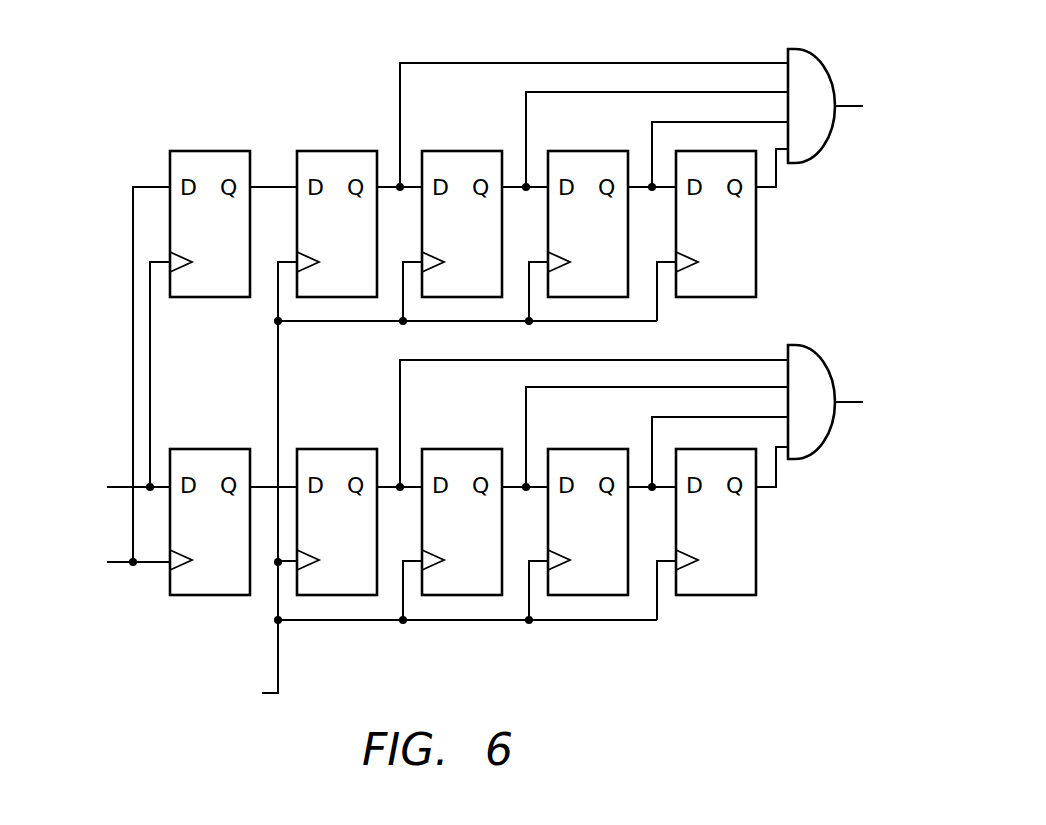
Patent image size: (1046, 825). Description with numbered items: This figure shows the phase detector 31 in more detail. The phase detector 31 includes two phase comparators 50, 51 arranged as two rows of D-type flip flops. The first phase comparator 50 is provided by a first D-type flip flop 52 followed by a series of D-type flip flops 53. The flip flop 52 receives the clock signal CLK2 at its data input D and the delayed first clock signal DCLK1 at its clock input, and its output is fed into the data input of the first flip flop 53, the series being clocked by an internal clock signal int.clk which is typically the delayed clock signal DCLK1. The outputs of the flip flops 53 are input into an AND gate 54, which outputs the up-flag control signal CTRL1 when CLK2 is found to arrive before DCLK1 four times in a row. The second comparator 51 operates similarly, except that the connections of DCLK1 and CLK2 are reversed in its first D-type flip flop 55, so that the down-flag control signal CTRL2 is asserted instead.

The phase detector 31 is at (284, 80).
The first phase comparator 50 is at (812, 254).
The second phase comparator 51 is at (812, 562).
The first D-type flip flop 52 is at (203, 150).
The D-type flip flop 53 is at (322, 150).
The AND gate 54 is at (826, 134).
The first D-type flip flop of second comparator 55 is at (211, 449).